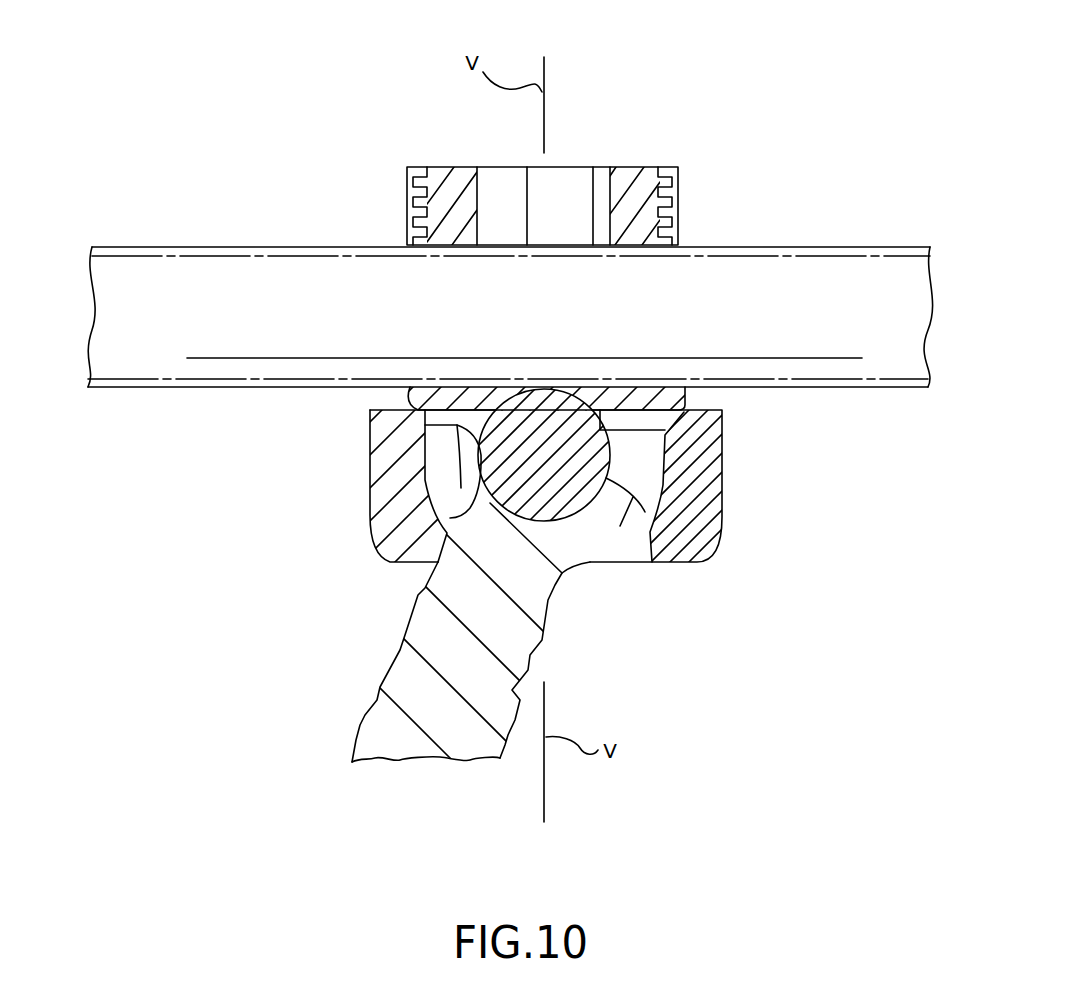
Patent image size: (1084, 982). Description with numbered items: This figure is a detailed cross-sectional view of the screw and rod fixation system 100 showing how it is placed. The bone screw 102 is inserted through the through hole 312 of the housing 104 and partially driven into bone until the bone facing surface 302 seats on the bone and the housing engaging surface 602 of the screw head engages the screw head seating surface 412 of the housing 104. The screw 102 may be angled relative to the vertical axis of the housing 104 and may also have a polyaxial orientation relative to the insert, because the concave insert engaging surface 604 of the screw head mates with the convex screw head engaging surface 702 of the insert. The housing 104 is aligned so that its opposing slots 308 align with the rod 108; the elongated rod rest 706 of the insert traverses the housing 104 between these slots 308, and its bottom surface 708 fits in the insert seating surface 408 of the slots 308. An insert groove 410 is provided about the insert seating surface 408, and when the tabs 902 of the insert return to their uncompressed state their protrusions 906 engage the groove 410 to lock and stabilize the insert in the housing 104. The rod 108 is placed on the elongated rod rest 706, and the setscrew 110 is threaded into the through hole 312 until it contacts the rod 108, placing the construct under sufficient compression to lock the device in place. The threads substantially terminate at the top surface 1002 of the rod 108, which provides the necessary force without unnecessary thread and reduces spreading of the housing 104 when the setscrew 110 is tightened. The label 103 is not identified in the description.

The screw and rod fixation system 100 is at (716, 748).
The bone screw 102 is at (355, 722).
The mounting plate 103 is at (818, 272).
The housing 104 is at (722, 520).
The rod 108 is at (585, 488).
The setscrew 110 is at (644, 178).
The bone facing surface 302 is at (697, 563).
The slots 308 is at (399, 241).
The through hole 312 is at (595, 107).
The insert seating surface 408 is at (684, 413).
The insert groove 410 is at (398, 382).
The screw head seating surface 412 is at (375, 525).
The housing engaging surface 602 is at (422, 515).
The insert engaging surface 604 is at (447, 530).
The screw head engaging surface 702 is at (445, 452).
The elongated rod rest 706 is at (657, 403).
The bottom surface 708 is at (447, 428).
The tabs 902 is at (703, 397).
The protrusions 906 is at (408, 412).
The top surface 1002 is at (212, 246).